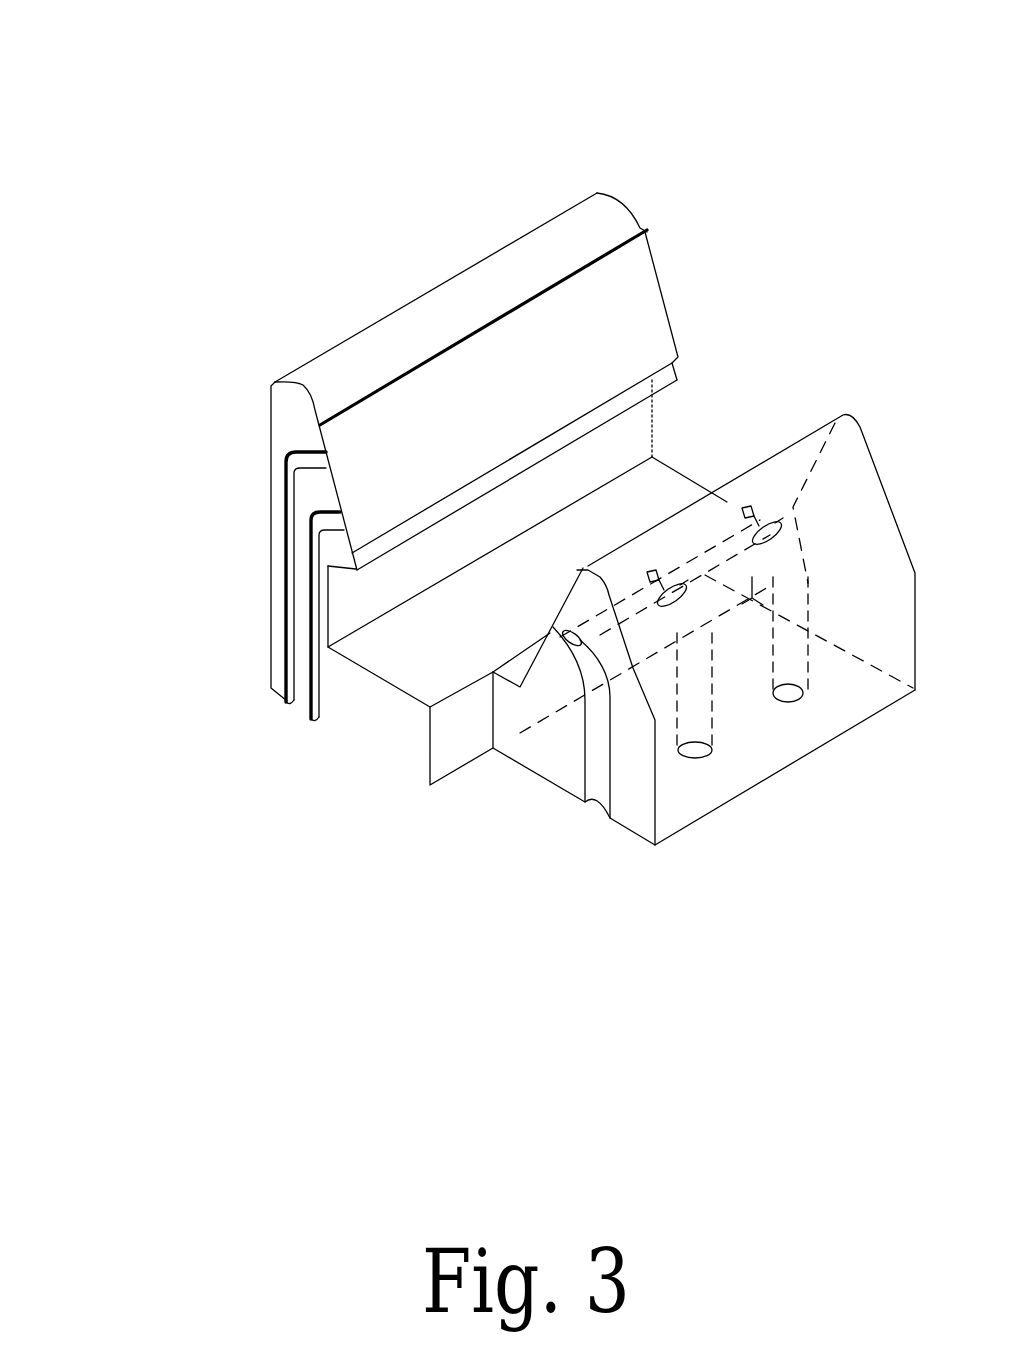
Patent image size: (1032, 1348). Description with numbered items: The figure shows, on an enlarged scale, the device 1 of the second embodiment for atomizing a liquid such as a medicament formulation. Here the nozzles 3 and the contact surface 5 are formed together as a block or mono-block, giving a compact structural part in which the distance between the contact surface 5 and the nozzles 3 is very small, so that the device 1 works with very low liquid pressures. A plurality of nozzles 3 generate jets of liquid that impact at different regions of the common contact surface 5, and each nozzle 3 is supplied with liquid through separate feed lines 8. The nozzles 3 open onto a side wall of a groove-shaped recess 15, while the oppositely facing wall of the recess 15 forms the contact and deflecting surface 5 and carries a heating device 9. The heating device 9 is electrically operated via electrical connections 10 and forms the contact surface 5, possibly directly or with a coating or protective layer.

The device 1 is at (445, 243).
The nozzle 3 is at (650, 572).
The contact surface 5 is at (637, 283).
The feed lines 8 is at (738, 742).
The heating device 9 is at (403, 375).
The electrical connections 10 is at (317, 630).
The groove-shaped recess 15 is at (675, 447).